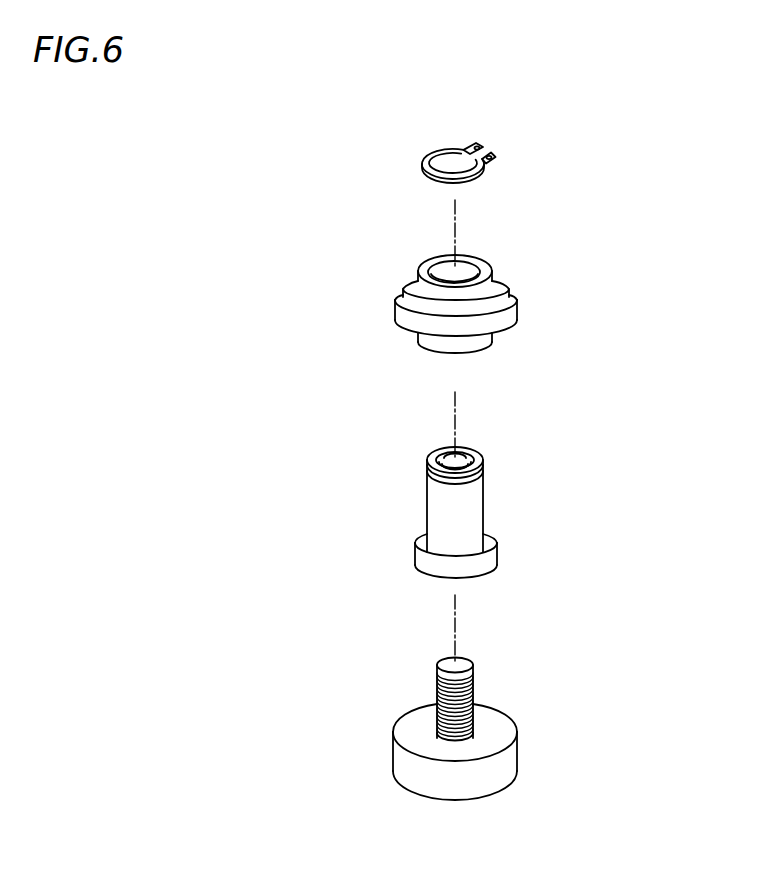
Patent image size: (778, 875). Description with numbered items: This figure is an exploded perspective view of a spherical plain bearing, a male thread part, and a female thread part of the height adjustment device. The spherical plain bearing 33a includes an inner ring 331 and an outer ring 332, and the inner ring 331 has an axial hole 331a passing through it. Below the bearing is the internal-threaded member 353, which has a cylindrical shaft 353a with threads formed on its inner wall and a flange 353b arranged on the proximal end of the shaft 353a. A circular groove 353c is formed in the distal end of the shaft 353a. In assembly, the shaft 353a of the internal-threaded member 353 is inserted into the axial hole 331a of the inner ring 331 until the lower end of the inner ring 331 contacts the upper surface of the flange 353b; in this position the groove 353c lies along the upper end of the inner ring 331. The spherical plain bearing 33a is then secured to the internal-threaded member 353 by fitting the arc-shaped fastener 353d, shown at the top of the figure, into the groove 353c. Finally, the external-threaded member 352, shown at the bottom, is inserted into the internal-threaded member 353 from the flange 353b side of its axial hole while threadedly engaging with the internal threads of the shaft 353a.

The arc-shaped fastener 353d is at (432, 150).
The spherical plain bearing 33a is at (498, 275).
The axial hole 331a is at (469, 263).
The inner ring 331 is at (502, 253).
The outer ring 332 is at (490, 325).
The internal-threaded member 353 is at (504, 488).
The cylindrical shaft 353a is at (473, 495).
The flange 353b is at (488, 542).
The circular groove 353c is at (483, 472).
The external-threaded member 352 is at (471, 690).